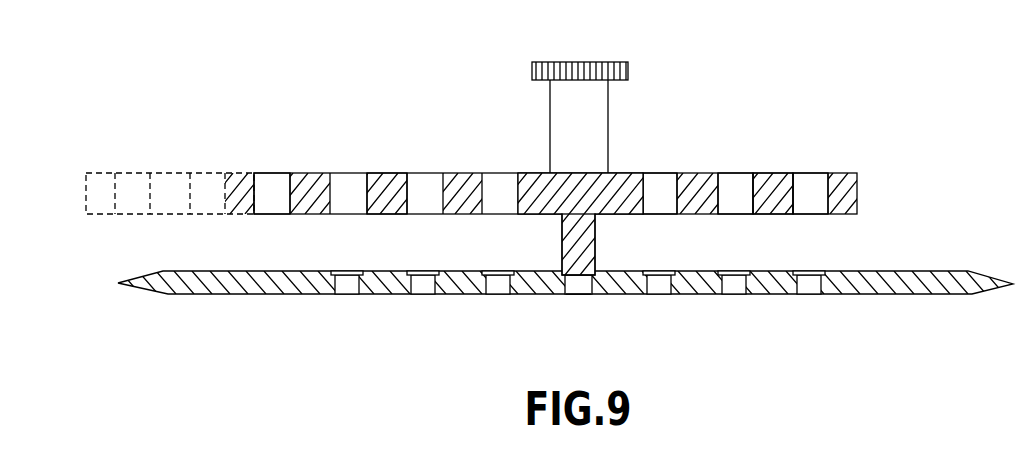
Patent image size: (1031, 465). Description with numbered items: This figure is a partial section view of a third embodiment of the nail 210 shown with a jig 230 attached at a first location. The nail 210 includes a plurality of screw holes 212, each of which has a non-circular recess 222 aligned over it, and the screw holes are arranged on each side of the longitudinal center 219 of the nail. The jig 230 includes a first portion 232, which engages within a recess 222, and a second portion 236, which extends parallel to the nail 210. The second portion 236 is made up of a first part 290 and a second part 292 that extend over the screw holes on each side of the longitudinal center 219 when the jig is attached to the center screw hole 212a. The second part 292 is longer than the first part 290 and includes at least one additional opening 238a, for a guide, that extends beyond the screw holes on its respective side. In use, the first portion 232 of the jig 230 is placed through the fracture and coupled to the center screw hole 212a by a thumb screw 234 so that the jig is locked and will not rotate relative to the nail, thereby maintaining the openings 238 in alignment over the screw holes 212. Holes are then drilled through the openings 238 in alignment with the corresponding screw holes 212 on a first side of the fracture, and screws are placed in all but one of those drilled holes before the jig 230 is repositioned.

The nail 210 is at (160, 287).
The screw holes 212 is at (805, 288).
The center screw hole 212a is at (583, 296).
The longitudinal center 219 is at (573, 294).
The non-circular recess 222 is at (808, 270).
The jig 230 is at (627, 180).
The first portion 232 is at (702, 296).
The thumb screw 234 is at (630, 70).
The second portion 236 is at (535, 185).
The openings 238 is at (810, 183).
The additional opening 238a is at (204, 183).
The first part 290 is at (777, 183).
The second part 292 is at (402, 184).